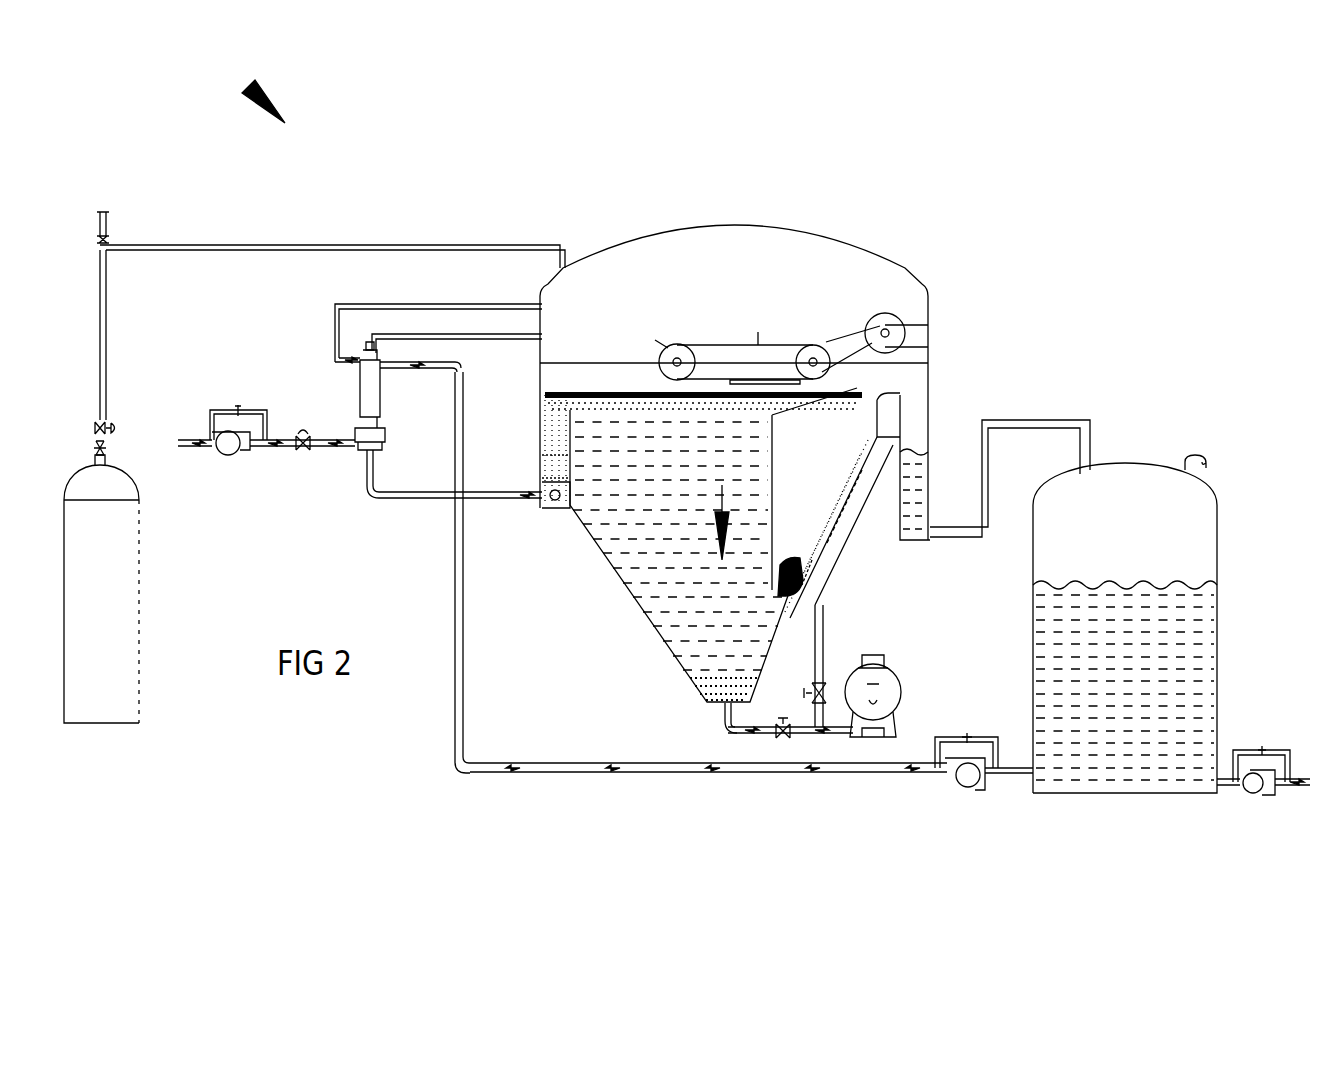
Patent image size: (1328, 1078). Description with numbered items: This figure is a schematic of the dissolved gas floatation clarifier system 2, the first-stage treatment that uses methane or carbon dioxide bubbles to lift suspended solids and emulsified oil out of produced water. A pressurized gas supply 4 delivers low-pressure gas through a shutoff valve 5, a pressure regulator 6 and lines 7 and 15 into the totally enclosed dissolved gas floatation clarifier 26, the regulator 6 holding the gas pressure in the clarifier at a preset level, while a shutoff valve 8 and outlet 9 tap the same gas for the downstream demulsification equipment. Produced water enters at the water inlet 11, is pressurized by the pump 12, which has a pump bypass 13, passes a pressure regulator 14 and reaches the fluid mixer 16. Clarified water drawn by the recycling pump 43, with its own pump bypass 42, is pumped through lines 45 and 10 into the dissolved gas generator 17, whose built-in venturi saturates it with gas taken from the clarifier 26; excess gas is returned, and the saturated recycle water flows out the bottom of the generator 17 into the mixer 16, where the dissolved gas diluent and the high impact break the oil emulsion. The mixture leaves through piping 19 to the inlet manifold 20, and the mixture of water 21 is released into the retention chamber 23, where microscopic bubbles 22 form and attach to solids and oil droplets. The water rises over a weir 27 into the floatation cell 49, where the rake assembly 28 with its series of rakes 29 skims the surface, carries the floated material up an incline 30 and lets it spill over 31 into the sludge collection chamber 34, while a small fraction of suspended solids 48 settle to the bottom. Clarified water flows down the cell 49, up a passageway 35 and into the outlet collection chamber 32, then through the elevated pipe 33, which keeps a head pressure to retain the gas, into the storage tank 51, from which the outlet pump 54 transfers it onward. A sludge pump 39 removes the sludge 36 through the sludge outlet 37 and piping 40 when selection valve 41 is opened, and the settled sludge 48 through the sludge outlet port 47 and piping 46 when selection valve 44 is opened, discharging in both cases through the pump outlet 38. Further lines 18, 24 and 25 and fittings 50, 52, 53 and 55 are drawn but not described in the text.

The dissolved gas floatation clarifier system 2 is at (252, 88).
The pressurized gas supply 4 is at (140, 583).
The shutoff valve 5 is at (94, 450).
The pressure regulator 6 is at (94, 428).
The line 7 is at (106, 318).
The shutoff valve 8 is at (97, 240).
The outlet 9 is at (105, 222).
The line 10 is at (455, 560).
The water inlet 11 is at (202, 448).
The pressurization pump 12 is at (234, 455).
The pump bypass 13 is at (240, 406).
The pressure regulator 14 is at (301, 430).
The line 15 is at (284, 252).
The fluid mixer 16 is at (386, 442).
The dissolved gas generator 17 is at (358, 405).
The return line 18 is at (384, 375).
The piping 19 is at (496, 499).
The inlet manifold 20 is at (553, 500).
The mixture of water 21 is at (545, 478).
The microscopic bubbles 22 is at (545, 452).
The retention chamber 23 is at (540, 425).
The gas line 24 is at (478, 333).
The gas line 25 is at (404, 303).
The dissolved gas floatation clarifier 26 is at (556, 240).
The weir 27 is at (610, 395).
The rake assembly 28 is at (675, 345).
The rakes 29 is at (745, 350).
The incline 30 is at (760, 390).
The spill over 31 is at (883, 318).
The outlet collection chamber 32 is at (907, 452).
The elevated pipe 33 is at (1018, 418).
The sludge collection chamber 34 is at (855, 462).
The passageway 35 is at (840, 500).
The sludge 36 is at (812, 565).
The sludge outlet 37 is at (804, 575).
The pump outlet 38 is at (888, 665).
The sludge pump 39 is at (852, 668).
The piping 40 is at (826, 650).
The selection valve 41 is at (812, 690).
The pump bypass 42 is at (968, 733).
The recycling pump 43 is at (960, 786).
The selection valve 44 is at (798, 734).
The line 45 is at (752, 772).
The piping 46 is at (768, 736).
The sludge outlet port 47 is at (723, 710).
The settled suspended solids 48 is at (704, 676).
The floatation cell 49 is at (632, 535).
The vent 50 is at (1194, 455).
The storage tank 51 is at (1217, 537).
The bypass valve 52 is at (1262, 746).
The outlet line 53 is at (1305, 790).
The outlet pump 54 is at (1258, 793).
The tank outlet 55 is at (1225, 790).